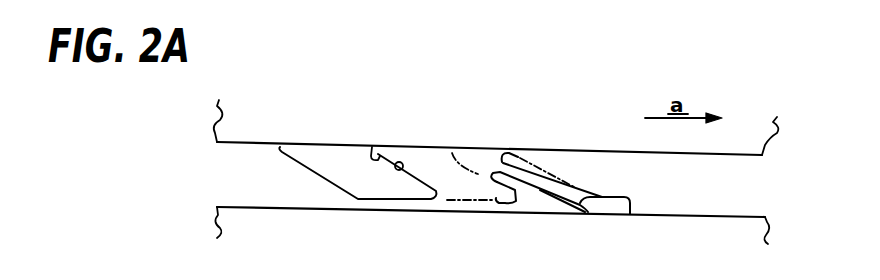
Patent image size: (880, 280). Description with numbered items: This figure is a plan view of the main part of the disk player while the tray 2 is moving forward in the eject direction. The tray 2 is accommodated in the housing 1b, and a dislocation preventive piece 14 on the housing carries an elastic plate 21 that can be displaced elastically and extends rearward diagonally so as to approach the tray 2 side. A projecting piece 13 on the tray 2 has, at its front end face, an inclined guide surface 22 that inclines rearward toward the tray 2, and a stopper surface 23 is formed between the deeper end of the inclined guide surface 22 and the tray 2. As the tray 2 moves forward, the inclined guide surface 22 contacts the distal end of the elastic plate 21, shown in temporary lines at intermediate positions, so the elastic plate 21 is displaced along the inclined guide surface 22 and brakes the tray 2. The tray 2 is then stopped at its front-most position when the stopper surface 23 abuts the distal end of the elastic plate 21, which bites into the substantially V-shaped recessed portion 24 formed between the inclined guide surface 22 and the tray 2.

The housing 1b is at (716, 223).
The tray 2 is at (248, 135).
The projecting piece 13 is at (300, 177).
The dislocation preventive piece 14 is at (611, 197).
The elastic plate 21 is at (536, 188).
The inclined guide surface 22 is at (398, 170).
The stopper surface 23 is at (378, 144).
The recessed portion 24 is at (415, 162).